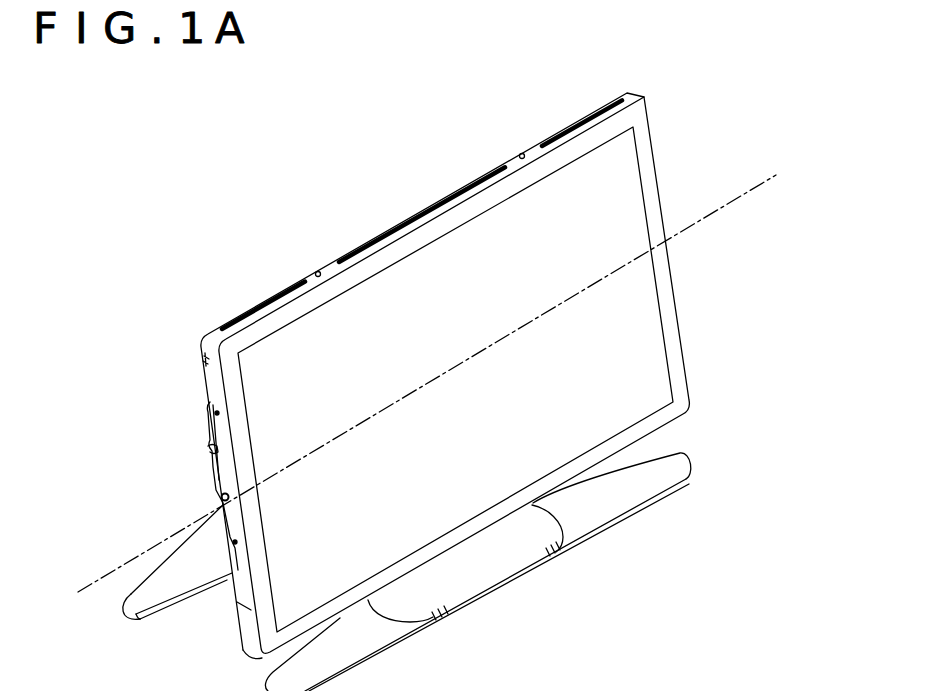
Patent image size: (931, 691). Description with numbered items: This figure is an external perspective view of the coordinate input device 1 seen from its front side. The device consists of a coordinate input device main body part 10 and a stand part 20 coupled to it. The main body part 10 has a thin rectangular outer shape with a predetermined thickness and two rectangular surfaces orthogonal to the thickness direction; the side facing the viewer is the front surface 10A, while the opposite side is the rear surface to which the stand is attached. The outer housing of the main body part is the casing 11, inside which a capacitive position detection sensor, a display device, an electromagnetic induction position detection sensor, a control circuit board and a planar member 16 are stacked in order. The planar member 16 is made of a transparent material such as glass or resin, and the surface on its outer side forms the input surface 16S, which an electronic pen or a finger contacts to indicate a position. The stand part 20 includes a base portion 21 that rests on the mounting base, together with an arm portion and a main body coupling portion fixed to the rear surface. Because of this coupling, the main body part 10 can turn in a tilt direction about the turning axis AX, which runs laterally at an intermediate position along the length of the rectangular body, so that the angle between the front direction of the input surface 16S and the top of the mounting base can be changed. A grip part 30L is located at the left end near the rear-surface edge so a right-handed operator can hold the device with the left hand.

The coordinate input device 1 is at (370, 224).
The coordinate input device main body part 10 is at (729, 187).
The front surface 10A is at (467, 243).
The casing 11 is at (648, 130).
The planar member 16 is at (640, 313).
The input surface 16S is at (623, 370).
The grip part 30L is at (217, 465).
The stand part 20 is at (651, 512).
The base portion 21 is at (492, 570).
The turning axis AX is at (747, 196).